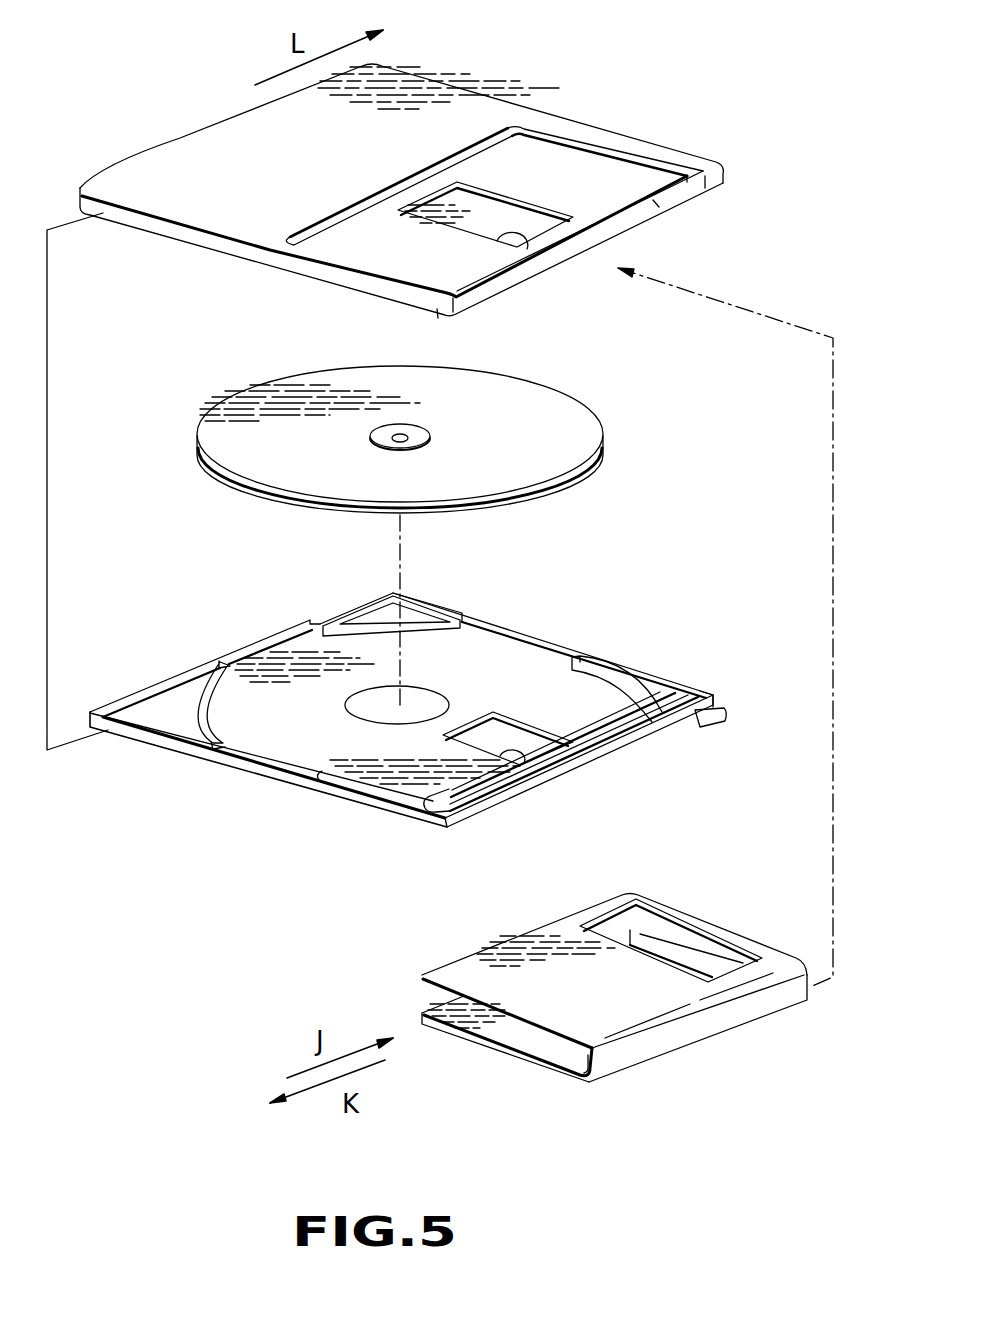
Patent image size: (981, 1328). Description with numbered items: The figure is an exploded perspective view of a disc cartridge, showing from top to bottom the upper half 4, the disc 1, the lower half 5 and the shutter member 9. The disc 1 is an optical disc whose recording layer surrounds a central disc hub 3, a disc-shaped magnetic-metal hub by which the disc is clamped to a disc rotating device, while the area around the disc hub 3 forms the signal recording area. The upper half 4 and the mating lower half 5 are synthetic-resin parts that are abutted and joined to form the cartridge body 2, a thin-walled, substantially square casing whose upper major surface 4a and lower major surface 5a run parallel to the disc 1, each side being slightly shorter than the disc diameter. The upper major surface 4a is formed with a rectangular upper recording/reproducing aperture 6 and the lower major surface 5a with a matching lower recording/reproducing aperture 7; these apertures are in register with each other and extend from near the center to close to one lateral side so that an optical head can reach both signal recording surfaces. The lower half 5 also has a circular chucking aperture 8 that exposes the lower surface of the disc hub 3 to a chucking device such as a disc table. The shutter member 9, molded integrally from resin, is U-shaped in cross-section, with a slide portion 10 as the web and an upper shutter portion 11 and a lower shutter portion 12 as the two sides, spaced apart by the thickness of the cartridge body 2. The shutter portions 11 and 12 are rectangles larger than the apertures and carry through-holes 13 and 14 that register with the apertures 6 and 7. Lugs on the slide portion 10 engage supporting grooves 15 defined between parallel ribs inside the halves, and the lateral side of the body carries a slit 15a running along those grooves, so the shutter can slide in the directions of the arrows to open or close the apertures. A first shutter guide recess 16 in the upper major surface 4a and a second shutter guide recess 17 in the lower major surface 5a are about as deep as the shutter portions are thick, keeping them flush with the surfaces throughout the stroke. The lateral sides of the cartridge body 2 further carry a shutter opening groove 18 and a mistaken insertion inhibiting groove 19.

The disc 1 is at (580, 430).
The cartridge body 2 is at (47, 550).
The disc hub 3 is at (453, 417).
The upper half 4 is at (502, 97).
The upper major surface 4a is at (232, 163).
The lower half 5 is at (227, 765).
The lower major surface 5a is at (310, 800).
The upper recording/reproducing aperture 6 is at (520, 240).
The lower recording/reproducing aperture 7 is at (537, 770).
The chucking aperture 8 is at (432, 694).
The shutter member 9 is at (612, 980).
The slide portion 10 is at (668, 1040).
The upper shutter portion 11 is at (483, 970).
The lower shutter portion 12 is at (507, 1032).
The through-hole 13 is at (600, 933).
The through-hole 14 is at (678, 960).
The supporting grooves 15 is at (640, 214).
The slit 15a is at (477, 287).
The first shutter guide recess 16 is at (620, 160).
The second shutter guide recess 17 is at (697, 727).
The shutter opening groove 18 is at (678, 190).
The mistaken insertion inhibiting groove 19 is at (347, 610).